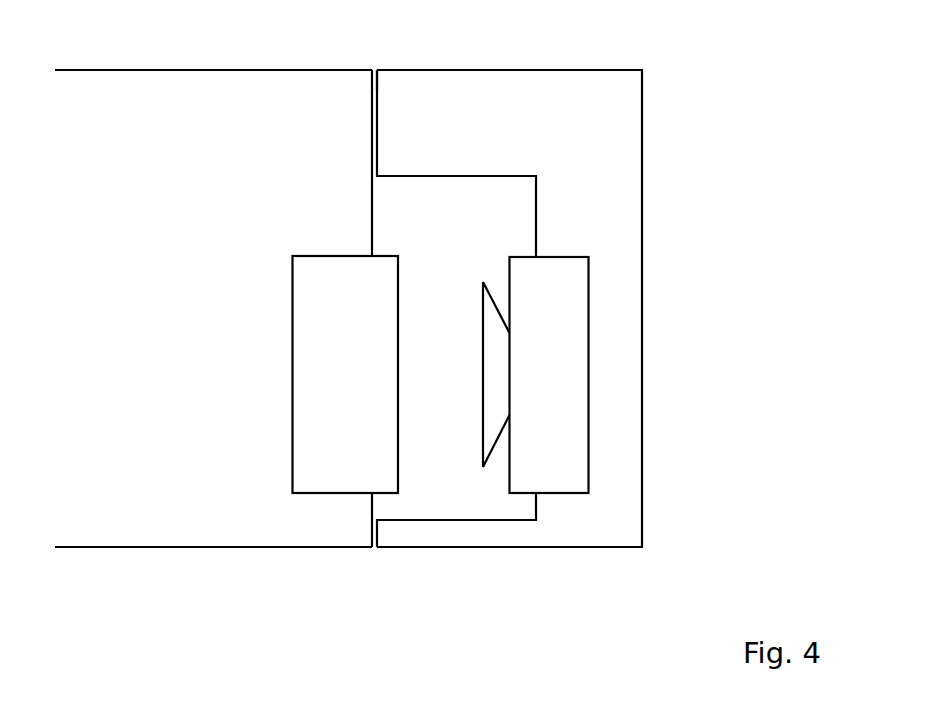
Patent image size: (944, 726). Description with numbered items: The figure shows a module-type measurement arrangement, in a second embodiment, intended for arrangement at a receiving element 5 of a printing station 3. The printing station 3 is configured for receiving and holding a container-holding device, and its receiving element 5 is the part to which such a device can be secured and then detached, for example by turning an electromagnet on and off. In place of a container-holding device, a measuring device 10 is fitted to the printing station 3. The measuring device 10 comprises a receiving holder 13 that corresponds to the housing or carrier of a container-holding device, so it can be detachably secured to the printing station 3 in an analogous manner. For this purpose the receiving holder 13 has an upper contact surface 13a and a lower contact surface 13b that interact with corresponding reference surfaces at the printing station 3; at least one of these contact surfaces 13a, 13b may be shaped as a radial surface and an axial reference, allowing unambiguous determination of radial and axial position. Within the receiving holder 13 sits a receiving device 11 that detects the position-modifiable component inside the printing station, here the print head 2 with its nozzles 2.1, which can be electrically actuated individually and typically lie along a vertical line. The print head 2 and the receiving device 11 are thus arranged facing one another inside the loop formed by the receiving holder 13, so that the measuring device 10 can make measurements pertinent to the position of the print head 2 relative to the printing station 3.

The print head 2 is at (352, 386).
The nozzles 2.1 is at (391, 308).
The printing station 3 is at (245, 69).
The receiving element 5 is at (378, 69).
The measuring device 10 is at (512, 287).
The receiving device 11 is at (590, 312).
The receiving holder 13 is at (645, 93).
The upper contact surface 13a is at (376, 123).
The lower contact surface 13b is at (376, 533).